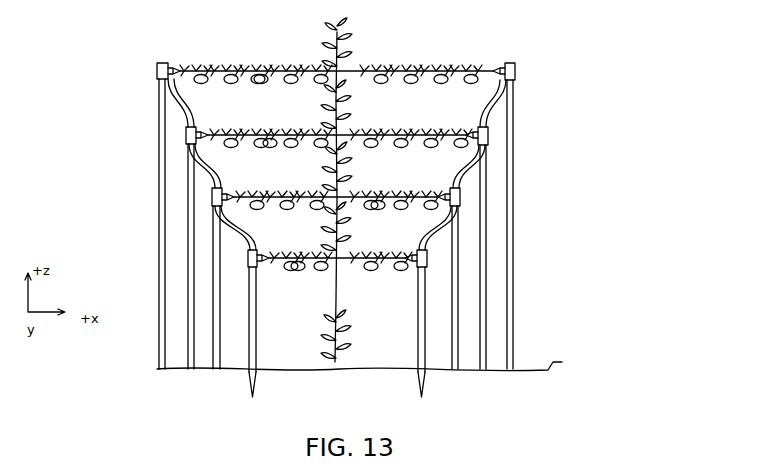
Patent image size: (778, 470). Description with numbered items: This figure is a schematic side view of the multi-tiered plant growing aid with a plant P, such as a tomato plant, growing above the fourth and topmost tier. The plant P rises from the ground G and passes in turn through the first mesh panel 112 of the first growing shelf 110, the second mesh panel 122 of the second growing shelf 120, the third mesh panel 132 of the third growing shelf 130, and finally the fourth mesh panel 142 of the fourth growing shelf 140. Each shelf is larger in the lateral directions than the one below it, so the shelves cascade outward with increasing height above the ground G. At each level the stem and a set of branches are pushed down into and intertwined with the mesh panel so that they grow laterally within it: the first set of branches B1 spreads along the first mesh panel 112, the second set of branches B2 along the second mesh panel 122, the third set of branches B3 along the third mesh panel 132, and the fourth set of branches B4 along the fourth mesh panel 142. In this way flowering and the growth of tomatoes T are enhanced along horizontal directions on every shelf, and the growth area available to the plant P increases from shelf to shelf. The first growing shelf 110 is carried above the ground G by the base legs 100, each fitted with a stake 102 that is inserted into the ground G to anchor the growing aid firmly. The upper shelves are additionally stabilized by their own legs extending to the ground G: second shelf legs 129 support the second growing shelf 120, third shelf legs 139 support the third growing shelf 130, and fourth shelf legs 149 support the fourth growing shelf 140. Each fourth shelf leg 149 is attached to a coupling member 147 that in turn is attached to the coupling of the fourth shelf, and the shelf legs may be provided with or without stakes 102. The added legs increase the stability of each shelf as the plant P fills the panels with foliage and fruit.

The base legs 100 is at (256, 332).
The stake 102 is at (254, 396).
The first growing shelf 110 is at (449, 267).
The first mesh panel 112 is at (344, 257).
The second growing shelf 120 is at (480, 201).
The second mesh panel 122 is at (342, 199).
The second shelf legs 129 is at (218, 330).
The third growing shelf 130 is at (507, 140).
The third mesh panel 132 is at (346, 138).
The third shelf legs 139 is at (188, 255).
The fourth growing shelf 140 is at (545, 67).
The fourth mesh panel 142 is at (352, 68).
The coupling member 147 is at (157, 65).
The fourth shelf legs 149 is at (158, 213).
The first set of branches B1 is at (293, 258).
The second set of branches B2 is at (273, 199).
The third set of branches B3 is at (260, 138).
The fourth set of branches B4 is at (262, 70).
The tomato T is at (258, 83).
The plant P is at (337, 352).
The ground G is at (562, 362).